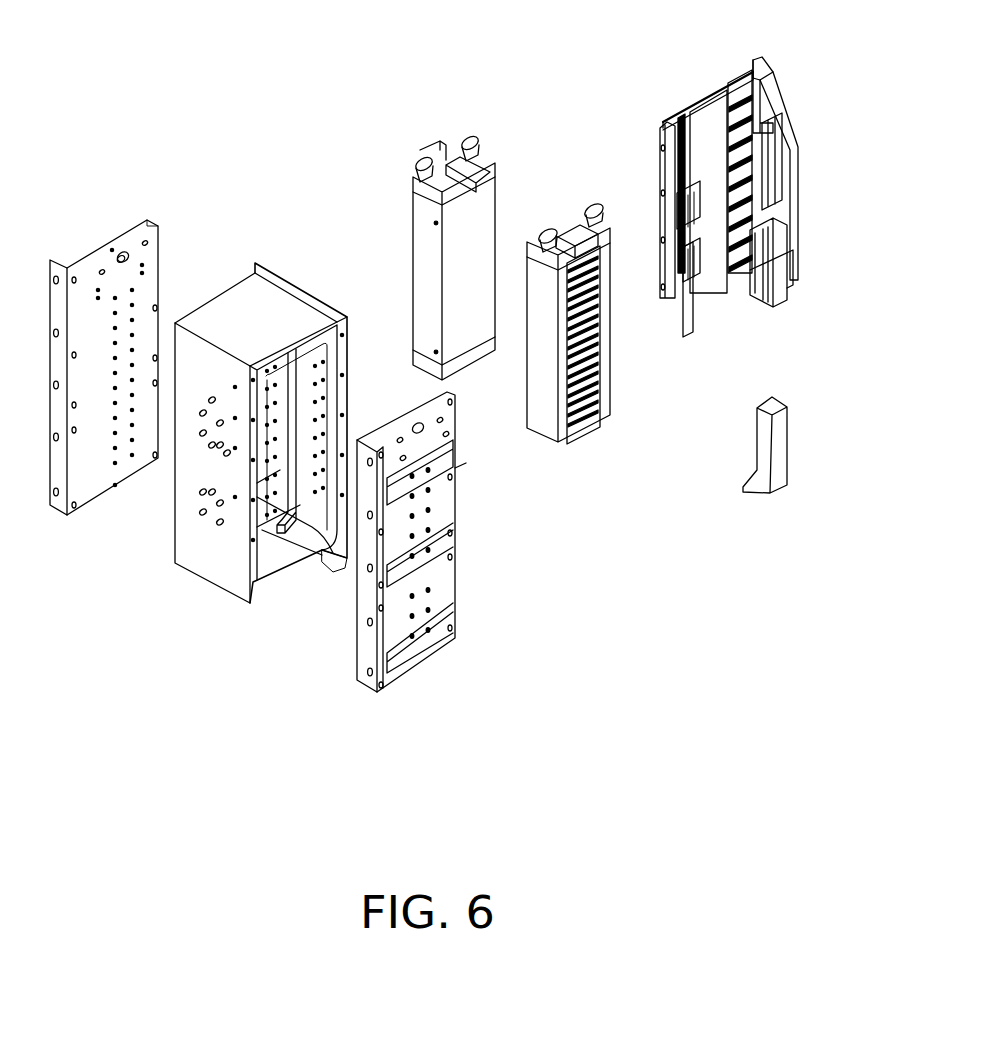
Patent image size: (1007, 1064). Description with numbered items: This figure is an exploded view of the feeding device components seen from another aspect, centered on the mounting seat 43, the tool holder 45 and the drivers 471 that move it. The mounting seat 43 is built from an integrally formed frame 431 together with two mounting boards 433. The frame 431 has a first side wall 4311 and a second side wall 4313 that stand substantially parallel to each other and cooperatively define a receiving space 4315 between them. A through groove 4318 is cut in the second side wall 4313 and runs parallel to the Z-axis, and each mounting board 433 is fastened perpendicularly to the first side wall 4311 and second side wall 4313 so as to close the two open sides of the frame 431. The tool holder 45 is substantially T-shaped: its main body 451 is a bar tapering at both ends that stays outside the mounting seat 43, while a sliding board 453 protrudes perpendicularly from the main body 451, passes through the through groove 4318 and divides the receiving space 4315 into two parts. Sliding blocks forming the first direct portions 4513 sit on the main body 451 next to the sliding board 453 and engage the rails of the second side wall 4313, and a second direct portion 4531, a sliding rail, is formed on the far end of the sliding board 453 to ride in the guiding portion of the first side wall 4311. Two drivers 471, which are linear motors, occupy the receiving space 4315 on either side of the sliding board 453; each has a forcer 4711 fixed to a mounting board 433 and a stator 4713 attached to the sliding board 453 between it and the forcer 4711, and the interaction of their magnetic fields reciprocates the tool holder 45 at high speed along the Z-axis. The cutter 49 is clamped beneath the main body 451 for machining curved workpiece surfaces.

The mounting seat 43 is at (258, 490).
The frame 431 is at (232, 468).
The first side wall 4311 is at (222, 565).
The second side wall 4313 is at (343, 570).
The receiving space 4315 is at (278, 553).
The through groove 4318 is at (299, 372).
The mounting board 433 is at (430, 642).
The tool holder 45 is at (687, 229).
The main body 451 is at (767, 77).
The sliding board 453 is at (727, 72).
The second direct portion 4531 is at (662, 131).
The first direct portion 4513 is at (768, 290).
The driver 471 is at (570, 331).
The forcer 4711 is at (576, 356).
The stator 4713 is at (712, 278).
The cutter 49 is at (778, 478).